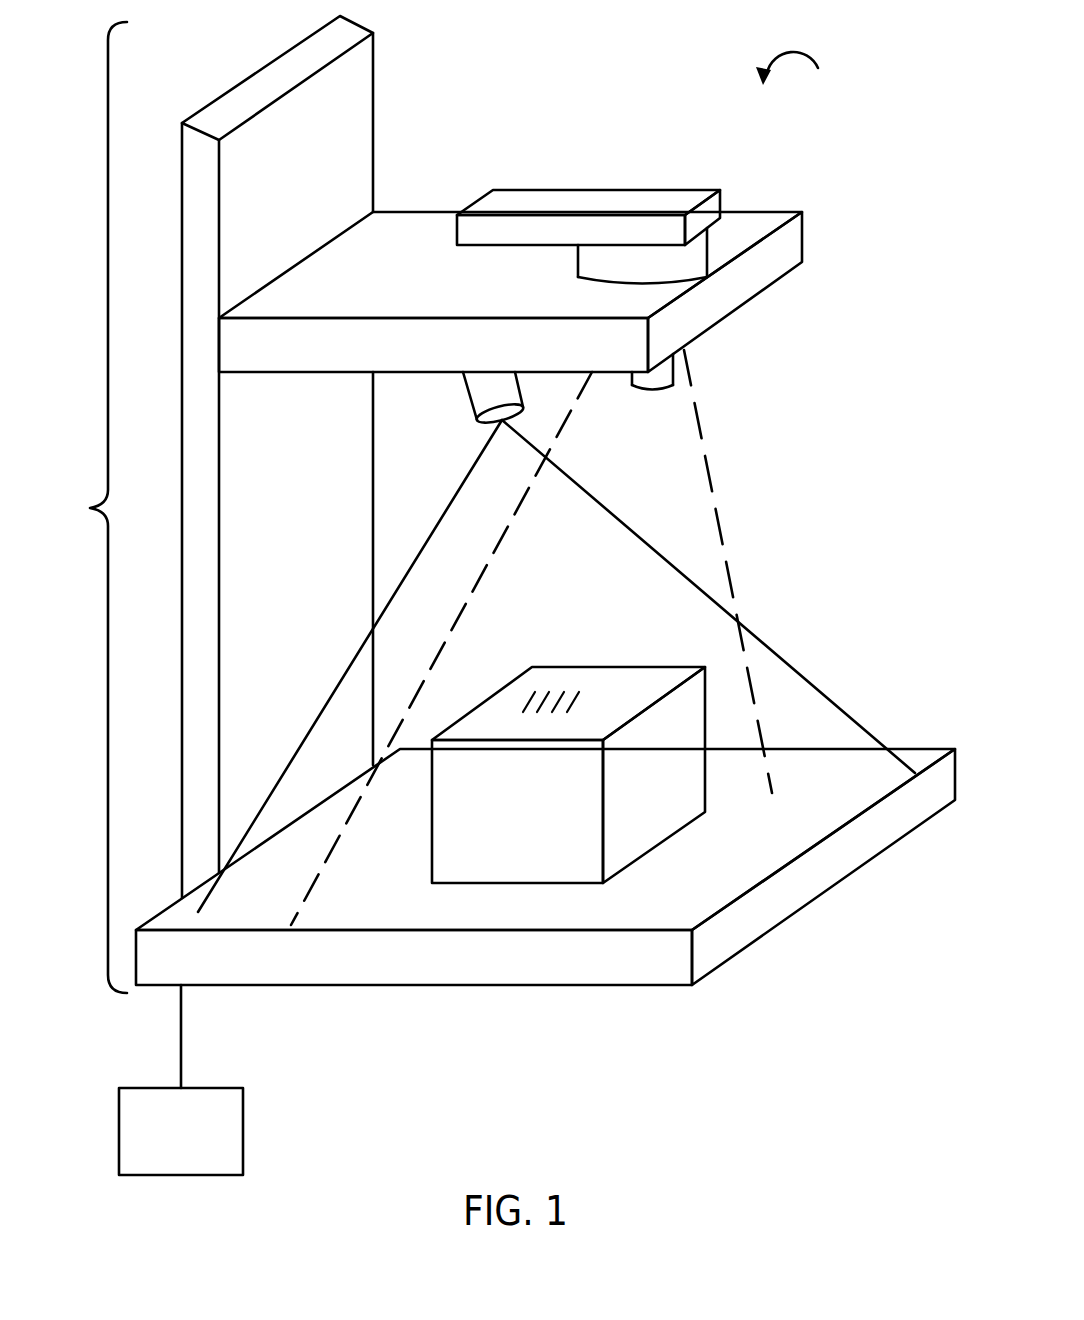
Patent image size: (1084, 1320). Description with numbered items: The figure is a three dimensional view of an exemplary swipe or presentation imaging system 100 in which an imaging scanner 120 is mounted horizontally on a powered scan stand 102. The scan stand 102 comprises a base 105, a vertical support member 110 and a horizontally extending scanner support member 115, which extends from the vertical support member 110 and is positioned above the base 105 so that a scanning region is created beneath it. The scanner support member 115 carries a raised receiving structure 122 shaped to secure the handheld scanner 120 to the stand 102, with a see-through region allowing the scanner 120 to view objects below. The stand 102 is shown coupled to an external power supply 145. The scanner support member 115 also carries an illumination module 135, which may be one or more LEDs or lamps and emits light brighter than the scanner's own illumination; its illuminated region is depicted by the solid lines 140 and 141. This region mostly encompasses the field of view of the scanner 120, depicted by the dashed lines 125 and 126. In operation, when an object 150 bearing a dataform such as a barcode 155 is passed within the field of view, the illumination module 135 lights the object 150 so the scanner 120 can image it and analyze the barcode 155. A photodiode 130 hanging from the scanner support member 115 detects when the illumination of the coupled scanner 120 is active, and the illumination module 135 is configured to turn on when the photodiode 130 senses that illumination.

The swipe or presentation imaging system 100 is at (797, 73).
The powered scan stand 102 is at (85, 507).
The base 105 is at (545, 891).
The vertical support member 110 is at (325, 457).
The scanner support member 115 is at (548, 265).
The imaging scanner 120 is at (588, 192).
The receiving structure 122 is at (589, 262).
The dashed line 125 is at (441, 648).
The dashed line 126 is at (745, 571).
The photodiode 130 is at (630, 405).
The illumination module 135 is at (462, 402).
The solid line 140 is at (350, 666).
The solid line 141 is at (708, 596).
The external power supply 145 is at (228, 1080).
The object 150 is at (587, 775).
The barcode 155 is at (578, 706).